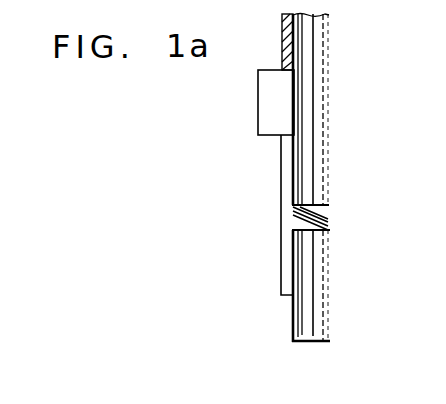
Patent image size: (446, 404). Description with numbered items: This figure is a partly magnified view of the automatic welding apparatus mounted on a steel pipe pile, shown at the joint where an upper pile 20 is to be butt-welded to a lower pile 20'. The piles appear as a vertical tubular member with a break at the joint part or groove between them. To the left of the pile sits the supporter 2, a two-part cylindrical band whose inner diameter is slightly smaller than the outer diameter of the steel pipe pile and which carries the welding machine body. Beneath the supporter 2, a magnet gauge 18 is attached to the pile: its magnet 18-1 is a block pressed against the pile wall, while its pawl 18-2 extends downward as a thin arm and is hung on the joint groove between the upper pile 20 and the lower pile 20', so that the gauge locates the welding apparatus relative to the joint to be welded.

The supporter 2 is at (283, 52).
The magnet gauge 18 is at (214, 182).
The magnet 18-1 is at (260, 87).
The pawl 18-2 is at (296, 200).
The upper pile 20 is at (284, 105).
The lower pile 20' is at (282, 286).